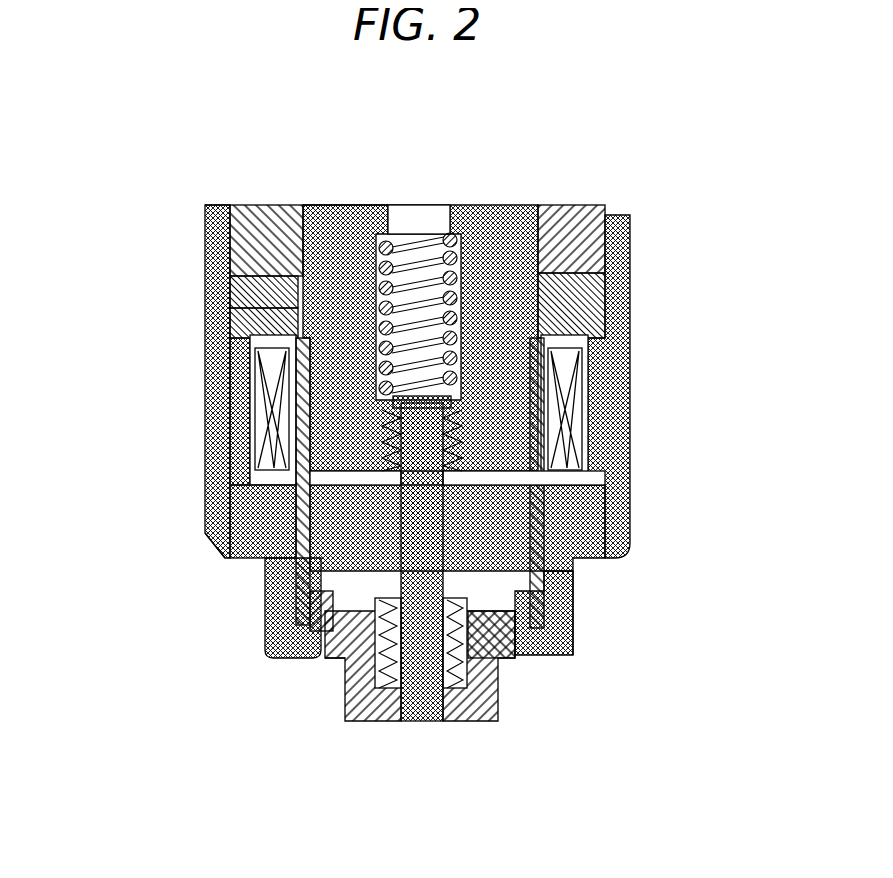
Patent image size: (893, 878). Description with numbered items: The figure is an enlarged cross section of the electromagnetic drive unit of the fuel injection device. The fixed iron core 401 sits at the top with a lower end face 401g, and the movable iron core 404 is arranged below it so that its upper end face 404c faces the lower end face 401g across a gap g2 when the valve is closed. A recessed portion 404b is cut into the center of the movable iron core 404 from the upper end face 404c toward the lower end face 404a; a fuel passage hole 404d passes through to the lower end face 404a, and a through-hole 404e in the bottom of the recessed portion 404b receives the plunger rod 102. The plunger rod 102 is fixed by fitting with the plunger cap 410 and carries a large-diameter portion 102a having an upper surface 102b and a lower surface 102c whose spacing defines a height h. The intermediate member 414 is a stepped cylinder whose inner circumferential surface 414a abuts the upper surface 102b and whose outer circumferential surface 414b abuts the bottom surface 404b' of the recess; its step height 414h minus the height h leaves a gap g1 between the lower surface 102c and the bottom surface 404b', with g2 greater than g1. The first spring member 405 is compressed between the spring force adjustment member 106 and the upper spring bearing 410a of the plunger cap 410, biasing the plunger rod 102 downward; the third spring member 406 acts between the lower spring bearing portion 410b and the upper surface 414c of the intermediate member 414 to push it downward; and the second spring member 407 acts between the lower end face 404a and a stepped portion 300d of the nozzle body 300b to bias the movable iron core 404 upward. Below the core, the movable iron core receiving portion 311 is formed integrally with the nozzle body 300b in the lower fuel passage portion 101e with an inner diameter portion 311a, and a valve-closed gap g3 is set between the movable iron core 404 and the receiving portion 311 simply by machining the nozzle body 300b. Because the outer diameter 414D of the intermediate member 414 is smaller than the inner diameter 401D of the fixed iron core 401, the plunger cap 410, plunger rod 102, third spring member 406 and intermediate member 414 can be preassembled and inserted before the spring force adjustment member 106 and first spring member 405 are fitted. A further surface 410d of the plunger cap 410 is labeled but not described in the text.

The upper spring bearing 410a is at (357, 197).
The plunger cap 410 is at (287, 197).
The lower spring bearing portion 410b is at (199, 197).
The inner circumferential surface 414a is at (226, 274).
The upper surface 414c is at (230, 306).
The intermediate member 414 is at (197, 318).
The outer circumferential surface 414b is at (246, 372).
The lower end face 401g is at (300, 440).
The upper end face 404c is at (226, 482).
The movable iron core 404 is at (197, 498).
The recessed portion 404b is at (140, 534).
The nozzle body 300b is at (245, 536).
The lower end face 404a is at (257, 580).
The fuel passage hole 404d is at (257, 606).
The movable iron core receiving portion 311 is at (345, 622).
The bottom surface 404b' is at (276, 726).
The inner diameter 401D is at (455, 152).
The spring force adjustment member 106 is at (460, 197).
The fixed iron core 401 is at (543, 197).
The first spring member 405 is at (623, 268).
The plunger rod 102 is at (623, 357).
The housing inner surface 410d is at (623, 383).
The third spring member 406 is at (627, 415).
The upper surface 102b is at (623, 424).
The gap g2 is at (600, 460).
The height h is at (600, 487).
The step height 414h is at (712, 480).
The gap g1 is at (622, 505).
The valve-closed-state gap g3 is at (565, 563).
The lower surface 102c is at (565, 570).
The large-diameter portion 102a is at (565, 592).
The lower fuel passage portion 101e is at (565, 645).
The through-hole 404e is at (530, 650).
The second spring member 407 is at (505, 690).
The stepped portion 300d is at (478, 713).
The outer diameter 414D is at (458, 728).
The diameter portion 311a is at (503, 762).